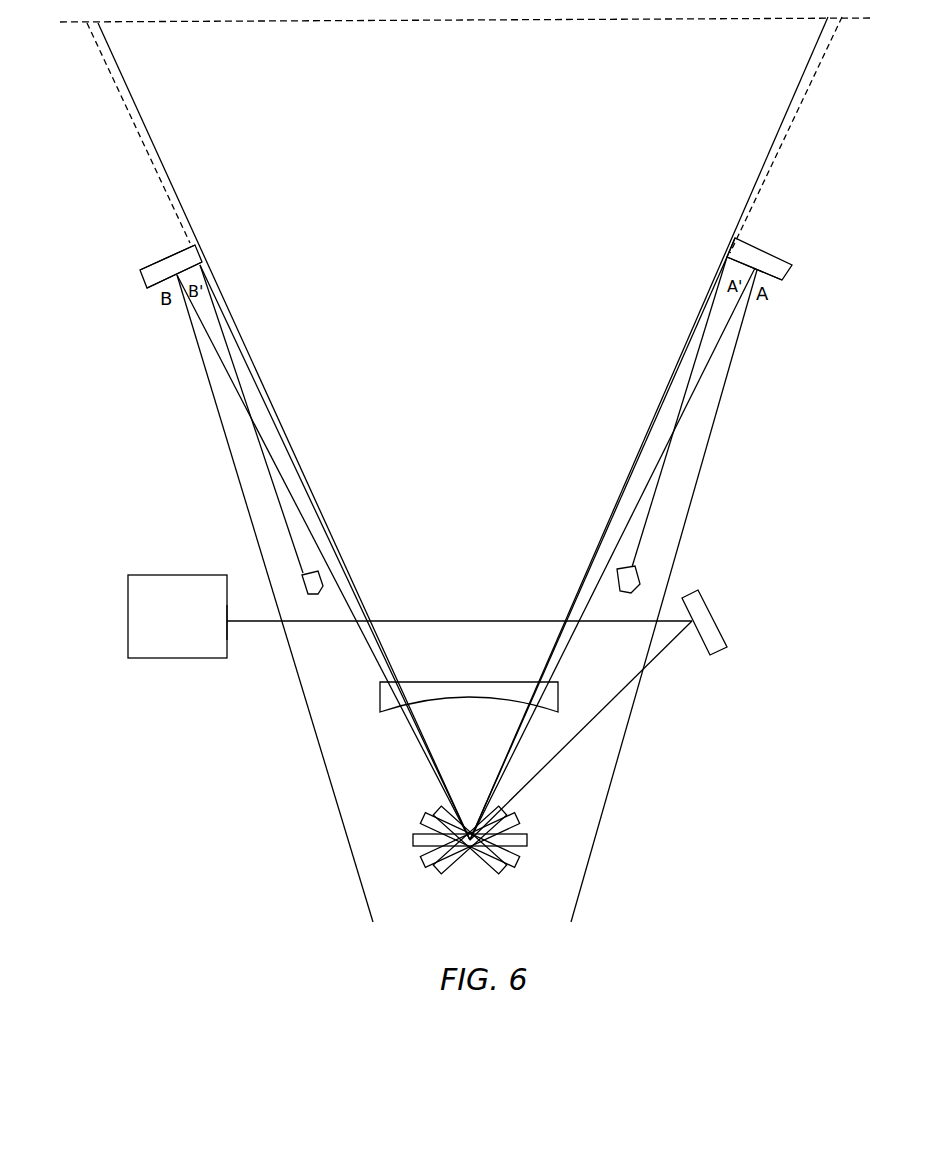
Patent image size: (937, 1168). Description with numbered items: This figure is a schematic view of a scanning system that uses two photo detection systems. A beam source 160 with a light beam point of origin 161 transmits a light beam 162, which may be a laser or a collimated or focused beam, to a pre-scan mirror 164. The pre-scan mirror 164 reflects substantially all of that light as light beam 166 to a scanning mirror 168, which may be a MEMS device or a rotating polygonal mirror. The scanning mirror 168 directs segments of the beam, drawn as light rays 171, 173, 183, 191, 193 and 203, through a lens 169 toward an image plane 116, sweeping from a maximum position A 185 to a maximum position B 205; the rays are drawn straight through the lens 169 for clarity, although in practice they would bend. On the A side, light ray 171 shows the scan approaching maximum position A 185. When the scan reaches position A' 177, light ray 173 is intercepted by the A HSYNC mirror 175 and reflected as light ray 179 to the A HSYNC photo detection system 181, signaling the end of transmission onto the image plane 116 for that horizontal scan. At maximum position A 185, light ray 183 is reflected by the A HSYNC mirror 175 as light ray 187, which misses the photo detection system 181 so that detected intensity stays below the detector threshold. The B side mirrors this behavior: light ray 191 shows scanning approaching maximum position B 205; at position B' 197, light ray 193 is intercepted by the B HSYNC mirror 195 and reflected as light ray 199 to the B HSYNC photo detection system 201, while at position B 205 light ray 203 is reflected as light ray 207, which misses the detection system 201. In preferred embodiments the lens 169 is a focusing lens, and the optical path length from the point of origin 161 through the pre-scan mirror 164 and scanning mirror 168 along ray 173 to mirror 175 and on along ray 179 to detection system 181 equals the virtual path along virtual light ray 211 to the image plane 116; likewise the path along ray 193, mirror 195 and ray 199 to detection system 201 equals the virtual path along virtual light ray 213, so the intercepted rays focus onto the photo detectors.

The image plane 116 is at (343, 22).
The virtual light ray 213 is at (124, 105).
The virtual light ray 211 is at (822, 68).
The light ray 191 is at (183, 208).
The light ray 171 is at (744, 206).
The B HSYNC mirror 195 is at (147, 262).
The maximum position B 205 is at (173, 268).
The position B' 197 is at (178, 247).
The A HSYNC mirror 175 is at (762, 253).
The position A' 177 is at (737, 240).
The maximum position A 185 is at (753, 270).
The light ray 193 is at (258, 388).
The light ray 203 is at (218, 350).
The light ray 207 is at (216, 402).
The light ray 199 is at (285, 510).
The B HSYNC photo detection system 201 is at (302, 575).
The light ray 173 is at (698, 332).
The light ray 183 is at (717, 348).
The light ray 187 is at (725, 385).
The light ray 179 is at (660, 483).
The A HSYNC photo detection system 181 is at (637, 576).
The beam source 160 is at (175, 660).
The light beam point of origin 161 is at (228, 625).
The light beam 162 is at (400, 620).
The pre-scan mirror 164 is at (712, 614).
The light beam 166 is at (550, 763).
The lens 169 is at (478, 682).
The scanning mirror 168 is at (447, 870).